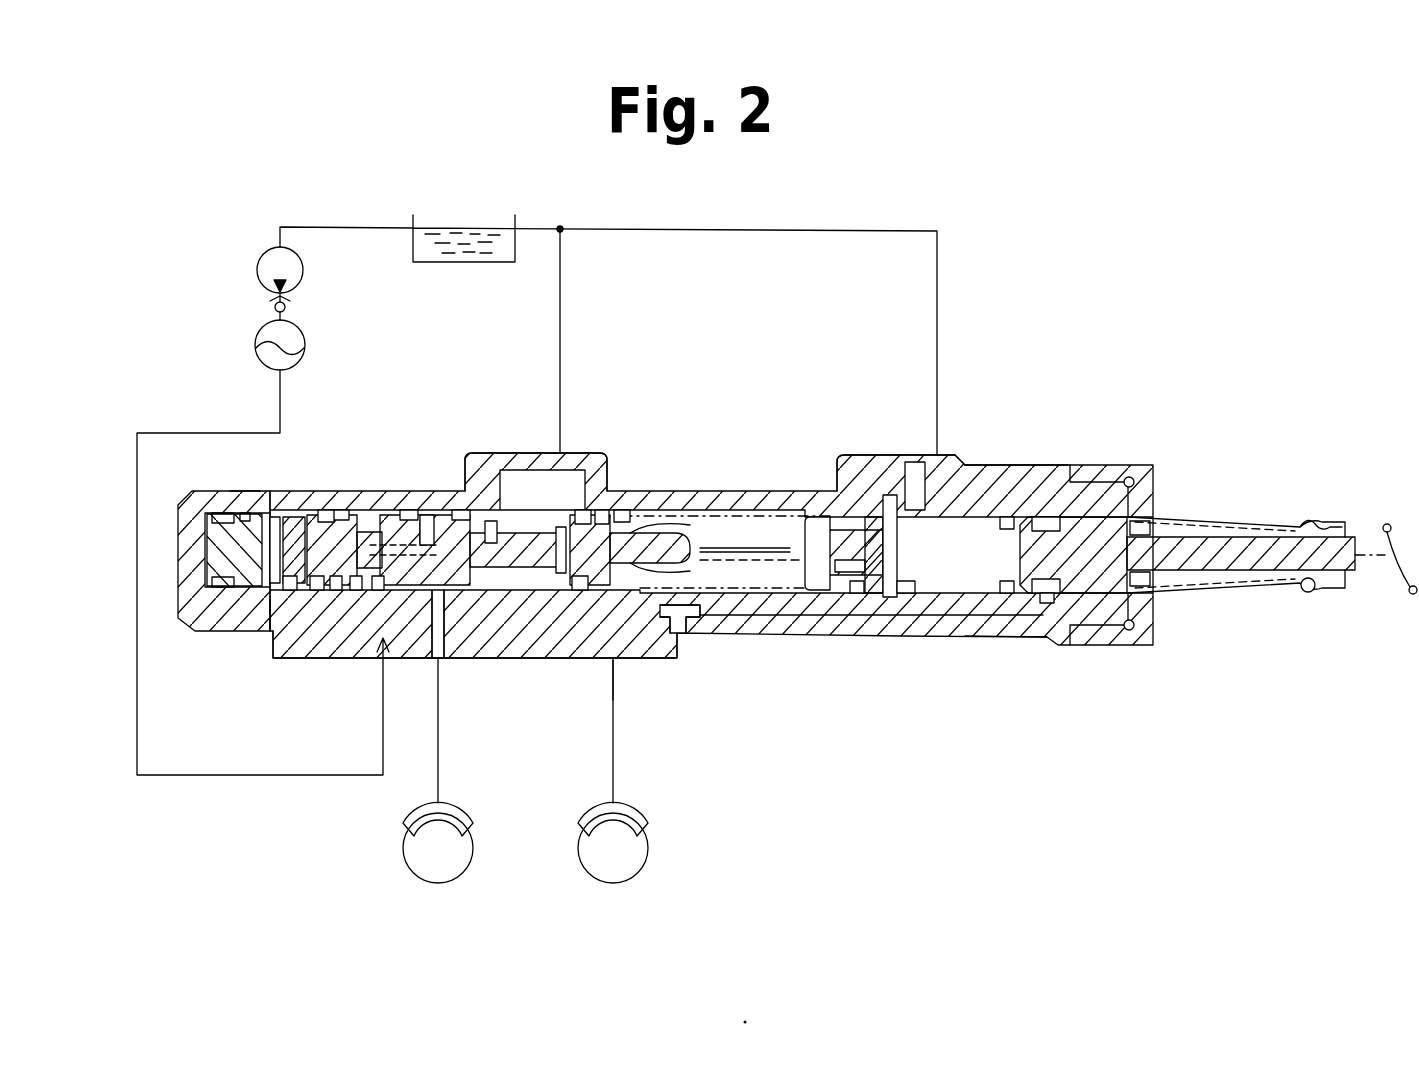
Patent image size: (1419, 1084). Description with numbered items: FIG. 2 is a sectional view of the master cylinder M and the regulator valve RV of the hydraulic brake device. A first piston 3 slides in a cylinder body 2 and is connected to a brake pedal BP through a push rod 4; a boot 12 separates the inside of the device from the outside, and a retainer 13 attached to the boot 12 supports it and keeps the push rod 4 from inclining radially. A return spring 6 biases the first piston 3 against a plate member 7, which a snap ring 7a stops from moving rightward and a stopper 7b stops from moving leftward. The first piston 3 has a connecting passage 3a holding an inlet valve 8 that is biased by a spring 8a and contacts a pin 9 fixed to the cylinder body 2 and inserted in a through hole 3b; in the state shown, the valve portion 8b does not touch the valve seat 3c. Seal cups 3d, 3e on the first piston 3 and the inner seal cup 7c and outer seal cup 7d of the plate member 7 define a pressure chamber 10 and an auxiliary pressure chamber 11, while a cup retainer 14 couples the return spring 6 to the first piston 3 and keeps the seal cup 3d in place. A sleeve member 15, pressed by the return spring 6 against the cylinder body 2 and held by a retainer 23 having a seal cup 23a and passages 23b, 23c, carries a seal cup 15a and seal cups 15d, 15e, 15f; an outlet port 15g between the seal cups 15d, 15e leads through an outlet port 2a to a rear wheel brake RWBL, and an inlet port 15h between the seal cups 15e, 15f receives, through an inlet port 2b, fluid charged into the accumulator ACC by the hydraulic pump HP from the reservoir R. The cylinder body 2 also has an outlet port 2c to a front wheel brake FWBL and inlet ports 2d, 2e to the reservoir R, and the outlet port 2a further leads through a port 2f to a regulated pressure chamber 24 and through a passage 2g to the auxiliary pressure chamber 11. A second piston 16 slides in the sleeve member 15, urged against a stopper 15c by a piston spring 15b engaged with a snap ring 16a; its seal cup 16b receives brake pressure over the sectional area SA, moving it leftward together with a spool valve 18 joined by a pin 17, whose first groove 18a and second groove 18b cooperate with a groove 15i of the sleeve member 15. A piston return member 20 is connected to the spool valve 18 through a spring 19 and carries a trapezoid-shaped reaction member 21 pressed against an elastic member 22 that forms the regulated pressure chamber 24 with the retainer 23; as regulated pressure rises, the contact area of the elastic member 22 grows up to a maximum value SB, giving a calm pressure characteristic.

The cylinder body 2 is at (1050, 470).
The outlet port 2a is at (436, 650).
The inlet port 2b is at (475, 726).
The outlet port 2c is at (624, 655).
The inlet port 2d is at (908, 468).
The inlet port 2e is at (572, 470).
The port 2f is at (266, 630).
The passage 2g is at (986, 640).
The first piston 3 is at (1140, 520).
The connecting passage 3a is at (874, 525).
The through hole 3b is at (1040, 518).
The valve seat 3c is at (906, 600).
The seal cup 3d is at (866, 600).
The seal cup 3e is at (1044, 640).
The push rod 4 is at (1320, 520).
The return spring 6 is at (742, 596).
The plate member 7 is at (1152, 628).
The snap ring 7a is at (1130, 476).
The stopper 7b is at (1096, 648).
The inner seal cup 7c is at (1150, 595).
The outer seal cup 7d is at (1128, 648).
The inlet valve 8 is at (826, 520).
The spring 8a is at (817, 596).
The valve portion 8b is at (848, 598).
The pin 9 is at (942, 500).
The pressure chamber 10 is at (746, 590).
The auxiliary pressure chamber 11 is at (1076, 648).
The boot 12 is at (1318, 600).
The retainer 13 is at (1260, 590).
The cup retainer 14 is at (802, 585).
The sleeve member 15 is at (522, 620).
The seal cup 15a is at (578, 600).
The piston spring 15b is at (655, 525).
The stopper 15c is at (638, 520).
The seal cup 15d is at (462, 500).
The seal cup 15e is at (410, 500).
The seal cup 15f is at (345, 510).
The outlet port 15g is at (382, 600).
The inlet port 15h is at (356, 600).
The groove 15i is at (338, 600).
The second piston 16 is at (700, 545).
The snap ring 16a is at (688, 598).
The seal cup 16b is at (606, 600).
The pin 17 is at (562, 660).
The spool valve 18 is at (448, 600).
The first groove 18a is at (423, 505).
The second groove 18b is at (492, 505).
The spring 19 is at (316, 590).
The piston return member 20 is at (288, 595).
The reaction member 21 is at (295, 518).
The elastic member 22 is at (275, 515).
The retainer 23 is at (218, 560).
The seal cup 23a is at (196, 510).
The passage 23b is at (200, 600).
The passage 23c is at (240, 498).
The regulated pressure chamber 24 is at (240, 500).
The hydraulic pump HP is at (262, 260).
The accumulator ACC is at (256, 340).
The reservoir R is at (413, 250).
The regulator valve RV is at (456, 334).
The master cylinder M is at (991, 388).
The sectional area of the second piston SA is at (621, 510).
The maximum contact area SB is at (327, 510).
The brake pedal BP is at (1400, 600).
The rear wheel brake RWBL is at (400, 818).
The front wheel brake FWBL is at (640, 810).